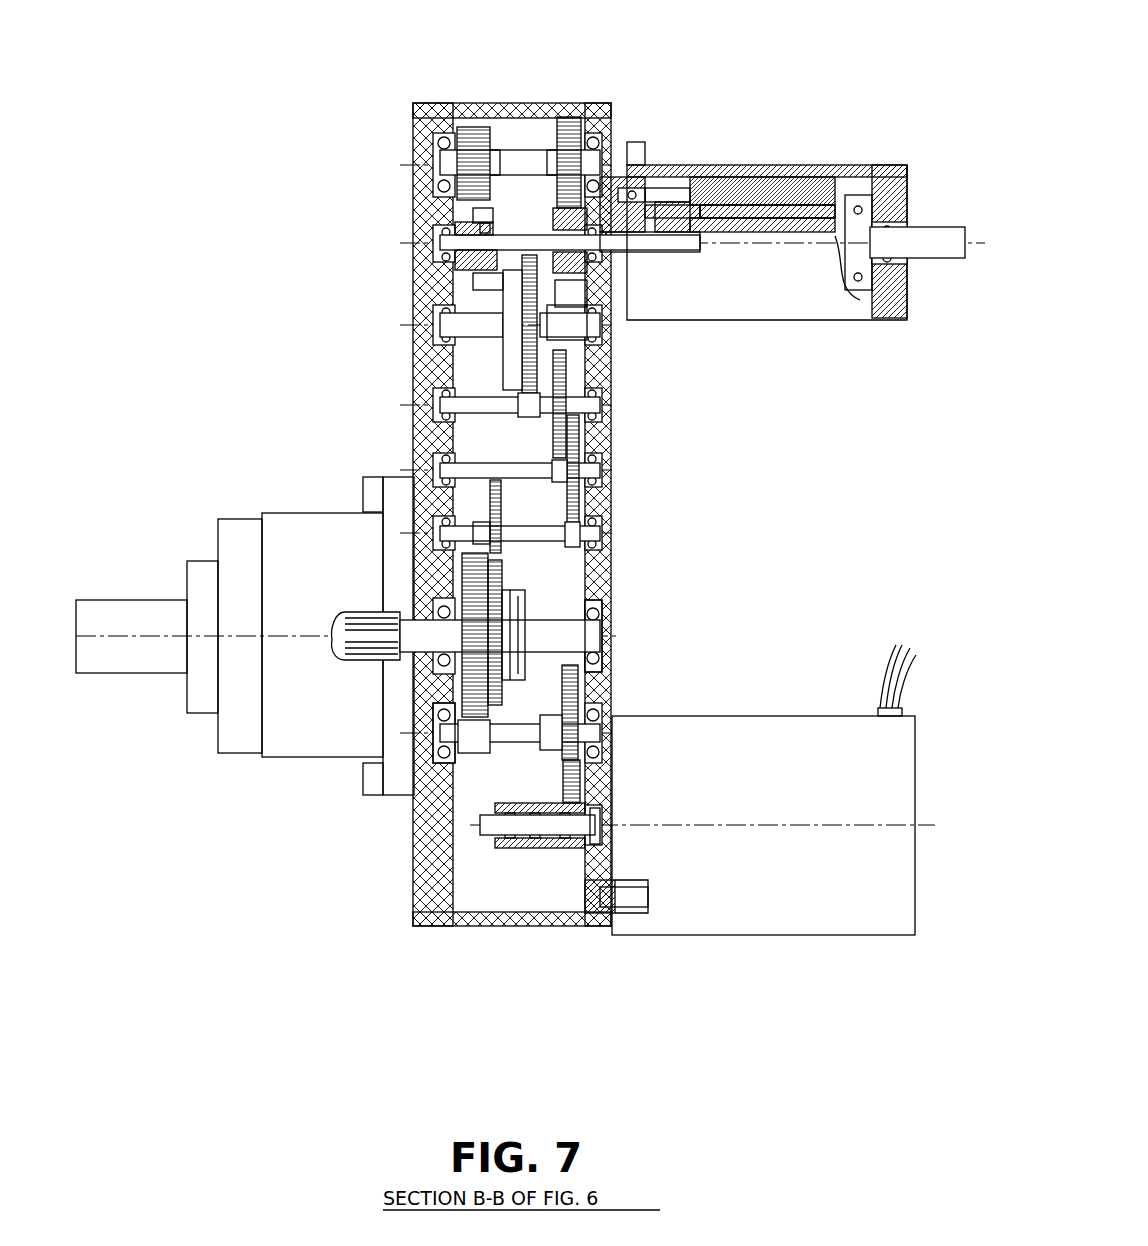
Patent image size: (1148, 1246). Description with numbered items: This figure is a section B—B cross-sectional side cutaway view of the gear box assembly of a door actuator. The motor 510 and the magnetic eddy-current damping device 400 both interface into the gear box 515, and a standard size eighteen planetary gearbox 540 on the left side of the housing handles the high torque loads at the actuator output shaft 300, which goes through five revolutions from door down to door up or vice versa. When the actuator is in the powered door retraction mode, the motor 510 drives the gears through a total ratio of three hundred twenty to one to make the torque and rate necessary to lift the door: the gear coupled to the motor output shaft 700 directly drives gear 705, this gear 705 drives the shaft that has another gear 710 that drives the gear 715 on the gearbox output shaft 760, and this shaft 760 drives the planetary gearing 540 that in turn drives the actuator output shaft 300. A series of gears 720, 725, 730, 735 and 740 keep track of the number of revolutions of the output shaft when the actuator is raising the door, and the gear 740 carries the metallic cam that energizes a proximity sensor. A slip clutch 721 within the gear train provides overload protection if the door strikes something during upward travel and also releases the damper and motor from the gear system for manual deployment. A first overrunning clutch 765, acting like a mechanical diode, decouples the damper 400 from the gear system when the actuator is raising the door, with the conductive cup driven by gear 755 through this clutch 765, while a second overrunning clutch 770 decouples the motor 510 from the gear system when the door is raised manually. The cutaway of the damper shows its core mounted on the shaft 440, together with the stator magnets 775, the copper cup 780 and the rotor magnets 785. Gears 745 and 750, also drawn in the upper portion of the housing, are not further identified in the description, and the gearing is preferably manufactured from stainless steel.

The output shaft 300 is at (121, 595).
The magnetic eddy-current damping device 400 is at (761, 160).
The shaft 440 is at (512, 222).
The motor 510 is at (797, 938).
The gear box 515 is at (410, 928).
The planetary gearbox 540 is at (213, 758).
The motor output shaft 700 is at (552, 858).
The gear 705 is at (597, 677).
The gear 710 is at (463, 760).
The gear 715 is at (454, 542).
The gear 720 is at (520, 592).
The slip clutch 721 is at (532, 618).
The gear 725 is at (478, 476).
The gear 730 is at (598, 438).
The gear 735 is at (580, 386).
The gear 740 is at (515, 300).
The gear 745 is at (590, 107).
The gear 750 is at (447, 108).
The gear 755 is at (553, 205).
The gearbox output shaft 760 is at (386, 664).
The first overrunning clutch 765 is at (647, 195).
The second overrunning clutch 770 is at (512, 850).
The stator magnets 775 is at (830, 163).
The copper cup 780 is at (849, 214).
The rotor magnets 785 is at (810, 222).